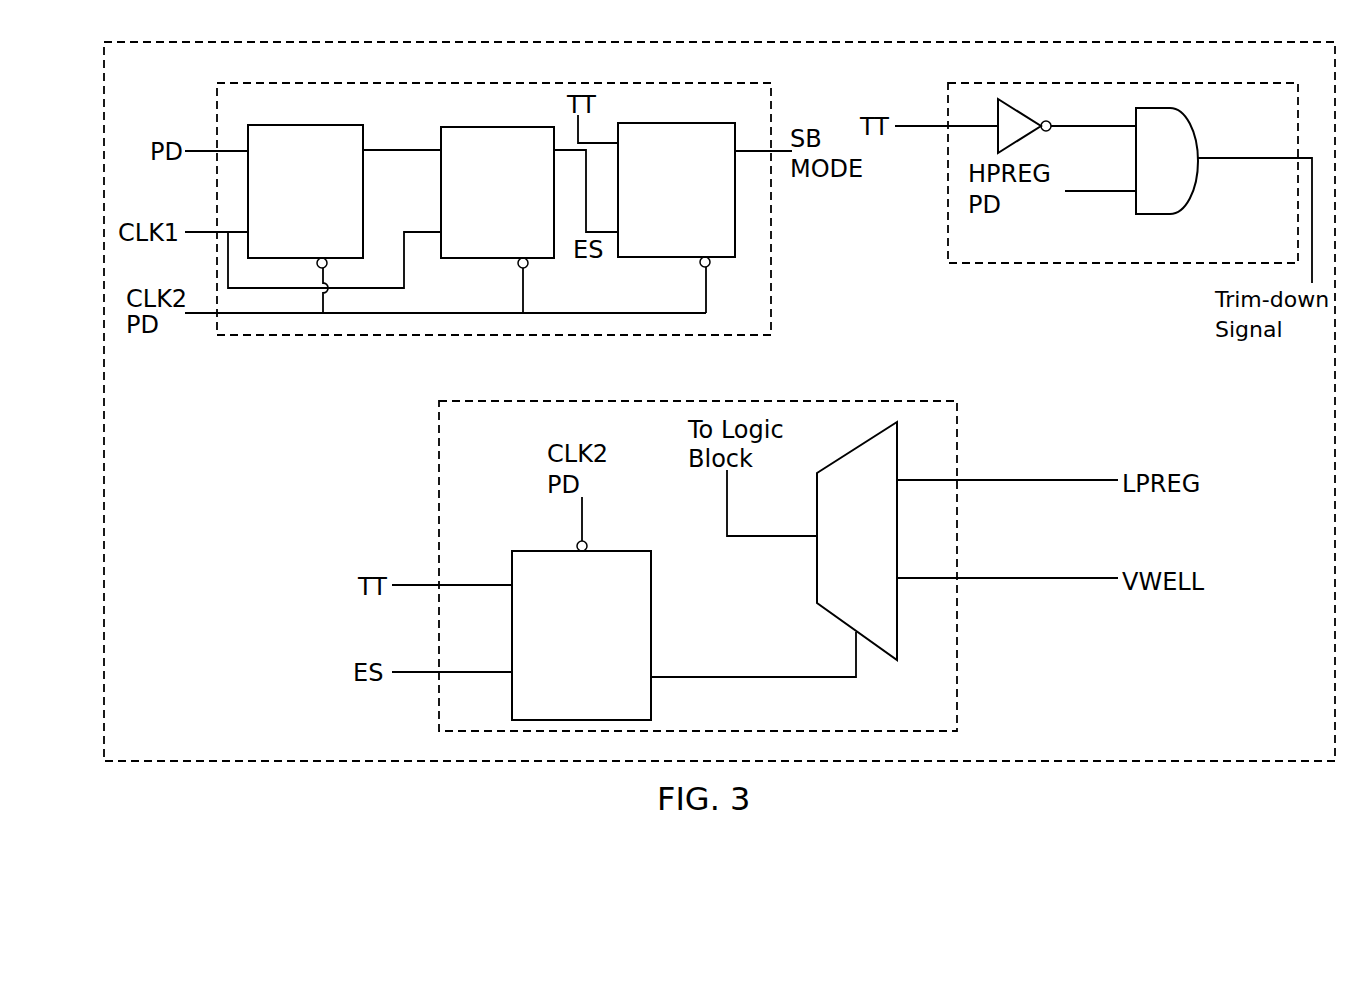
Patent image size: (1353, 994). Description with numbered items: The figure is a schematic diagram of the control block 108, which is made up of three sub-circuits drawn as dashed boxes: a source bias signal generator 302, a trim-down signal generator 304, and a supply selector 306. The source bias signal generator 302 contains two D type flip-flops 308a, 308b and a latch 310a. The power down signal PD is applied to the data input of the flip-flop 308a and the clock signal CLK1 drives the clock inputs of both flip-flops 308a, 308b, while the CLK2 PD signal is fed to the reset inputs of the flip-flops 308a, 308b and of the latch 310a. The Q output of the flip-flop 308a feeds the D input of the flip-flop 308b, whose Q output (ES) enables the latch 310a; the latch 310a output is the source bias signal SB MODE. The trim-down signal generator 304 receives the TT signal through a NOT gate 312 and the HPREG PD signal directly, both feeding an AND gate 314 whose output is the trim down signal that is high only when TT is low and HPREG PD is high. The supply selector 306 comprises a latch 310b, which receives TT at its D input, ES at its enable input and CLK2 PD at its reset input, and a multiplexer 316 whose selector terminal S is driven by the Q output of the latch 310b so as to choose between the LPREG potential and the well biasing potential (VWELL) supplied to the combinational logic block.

The control block 108 is at (180, 770).
The source bias signal generator 302 is at (771, 270).
The trim-down signal generator 304 is at (948, 207).
The supply selector 306 is at (439, 436).
The flip-flop 308a is at (273, 125).
The flip-flop 308b is at (497, 127).
The latch 310a is at (698, 123).
The latch 310b is at (622, 551).
The NOT gate 312 is at (1019, 106).
The AND gate 314 is at (1186, 116).
The multiplexer 316 is at (852, 450).